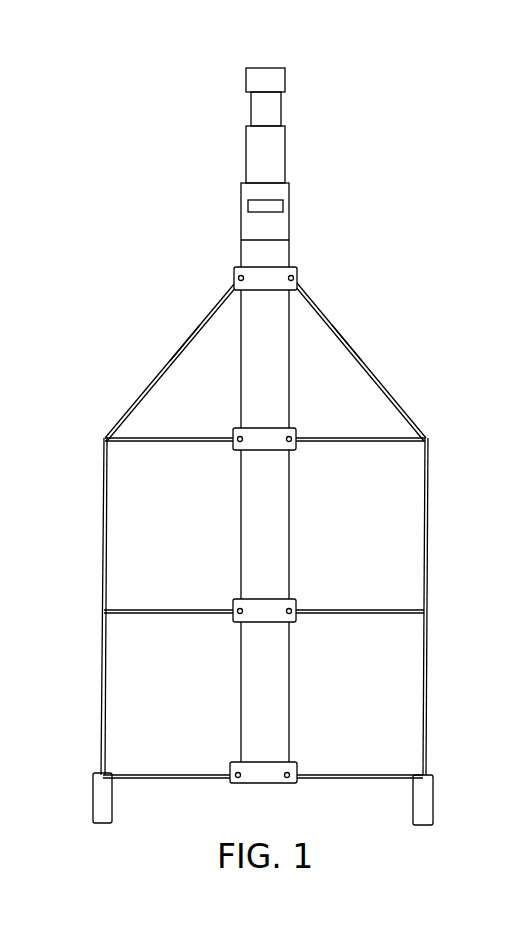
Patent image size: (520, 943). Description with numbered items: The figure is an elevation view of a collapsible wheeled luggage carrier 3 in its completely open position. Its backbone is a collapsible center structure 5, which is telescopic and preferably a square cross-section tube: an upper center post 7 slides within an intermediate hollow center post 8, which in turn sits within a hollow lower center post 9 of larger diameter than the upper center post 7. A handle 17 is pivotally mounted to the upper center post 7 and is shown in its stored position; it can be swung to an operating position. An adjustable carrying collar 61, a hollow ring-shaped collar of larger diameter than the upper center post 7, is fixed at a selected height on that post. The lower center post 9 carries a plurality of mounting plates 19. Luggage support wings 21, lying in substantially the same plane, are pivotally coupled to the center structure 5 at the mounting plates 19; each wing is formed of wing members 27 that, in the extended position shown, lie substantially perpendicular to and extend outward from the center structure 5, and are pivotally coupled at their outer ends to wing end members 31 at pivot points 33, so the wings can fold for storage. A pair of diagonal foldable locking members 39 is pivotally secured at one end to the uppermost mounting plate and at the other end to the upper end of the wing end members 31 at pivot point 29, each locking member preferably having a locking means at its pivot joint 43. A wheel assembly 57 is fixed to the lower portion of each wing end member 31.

The collapsible wheeled luggage carrier 3 is at (354, 106).
The collapsible center structure 5 is at (323, 480).
The upper center post 7 is at (287, 160).
The intermediate hollow center post 8 is at (254, 108).
The hollow lower center post 9 is at (282, 368).
The handle 17 is at (267, 72).
The mounting plates 19 is at (243, 451).
The luggage support wings 21 is at (82, 461).
The wing members 27 is at (130, 446).
The pivot point 29 is at (235, 277).
The wing end members 31 is at (103, 656).
The pivot points 33 is at (519, 600).
The diagonal foldable locking members 39 is at (130, 400).
The pivot joint 43 is at (177, 356).
The wheel assembly 57 is at (112, 806).
The adjustable carrying collar 61 is at (312, 216).